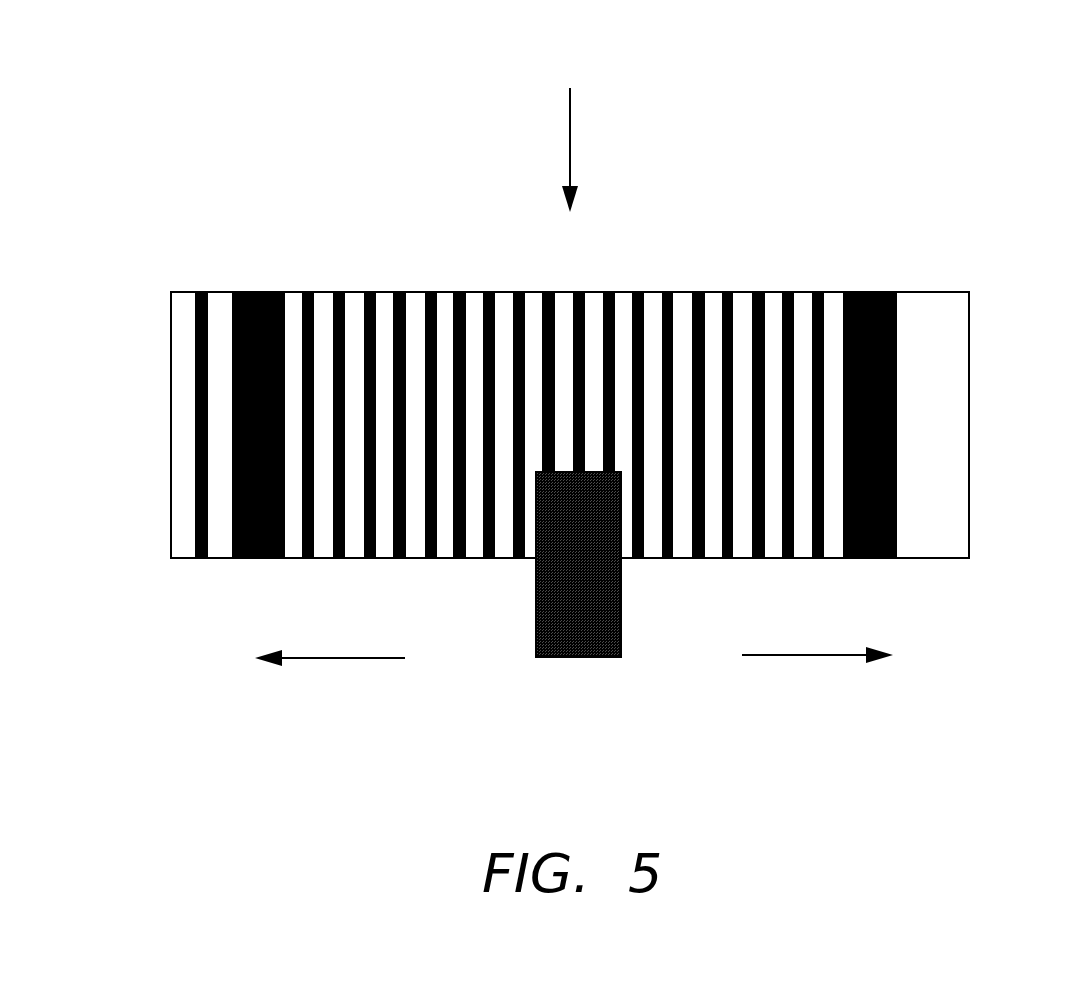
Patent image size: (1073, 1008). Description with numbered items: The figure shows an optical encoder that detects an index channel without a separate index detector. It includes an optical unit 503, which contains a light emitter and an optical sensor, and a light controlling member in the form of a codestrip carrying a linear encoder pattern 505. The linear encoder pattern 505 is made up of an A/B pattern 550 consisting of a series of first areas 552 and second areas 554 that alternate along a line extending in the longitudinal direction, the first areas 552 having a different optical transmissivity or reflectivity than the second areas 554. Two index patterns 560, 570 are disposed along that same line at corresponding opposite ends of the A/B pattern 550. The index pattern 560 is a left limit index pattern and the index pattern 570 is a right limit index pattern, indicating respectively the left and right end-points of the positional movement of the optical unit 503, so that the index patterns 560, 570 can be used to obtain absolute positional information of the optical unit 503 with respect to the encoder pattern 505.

The optical unit 503 is at (580, 658).
The linear encoder pattern 505 is at (948, 374).
The A/B pattern 550 is at (570, 130).
The first areas 552 is at (325, 293).
The second areas 554 is at (340, 293).
The left limit index pattern 560 is at (252, 560).
The right limit index pattern 570 is at (870, 292).